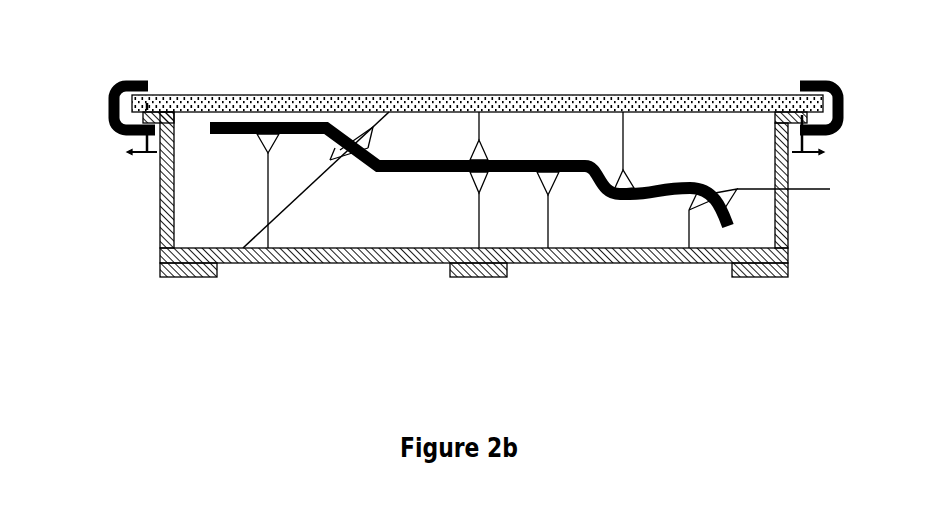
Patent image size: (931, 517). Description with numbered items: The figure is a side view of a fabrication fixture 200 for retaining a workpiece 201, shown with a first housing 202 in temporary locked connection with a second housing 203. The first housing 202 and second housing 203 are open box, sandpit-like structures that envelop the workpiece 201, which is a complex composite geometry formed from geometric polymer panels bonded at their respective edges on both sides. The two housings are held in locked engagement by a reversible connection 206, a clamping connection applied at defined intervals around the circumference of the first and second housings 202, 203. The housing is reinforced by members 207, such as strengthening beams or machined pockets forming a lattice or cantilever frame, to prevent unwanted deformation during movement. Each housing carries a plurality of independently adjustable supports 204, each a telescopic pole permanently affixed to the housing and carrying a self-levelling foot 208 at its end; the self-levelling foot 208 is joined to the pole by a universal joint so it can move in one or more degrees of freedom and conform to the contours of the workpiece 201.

The fabrication fixture 200 is at (480, 341).
The workpiece 201 is at (267, 125).
The first housing 202 is at (500, 95).
The second housing 203 is at (527, 265).
The independently adjustable support 204 is at (298, 205).
The reversible connection 206 is at (112, 90).
The reinforcing member 207 is at (178, 277).
The self-levelling foot 208 is at (473, 152).